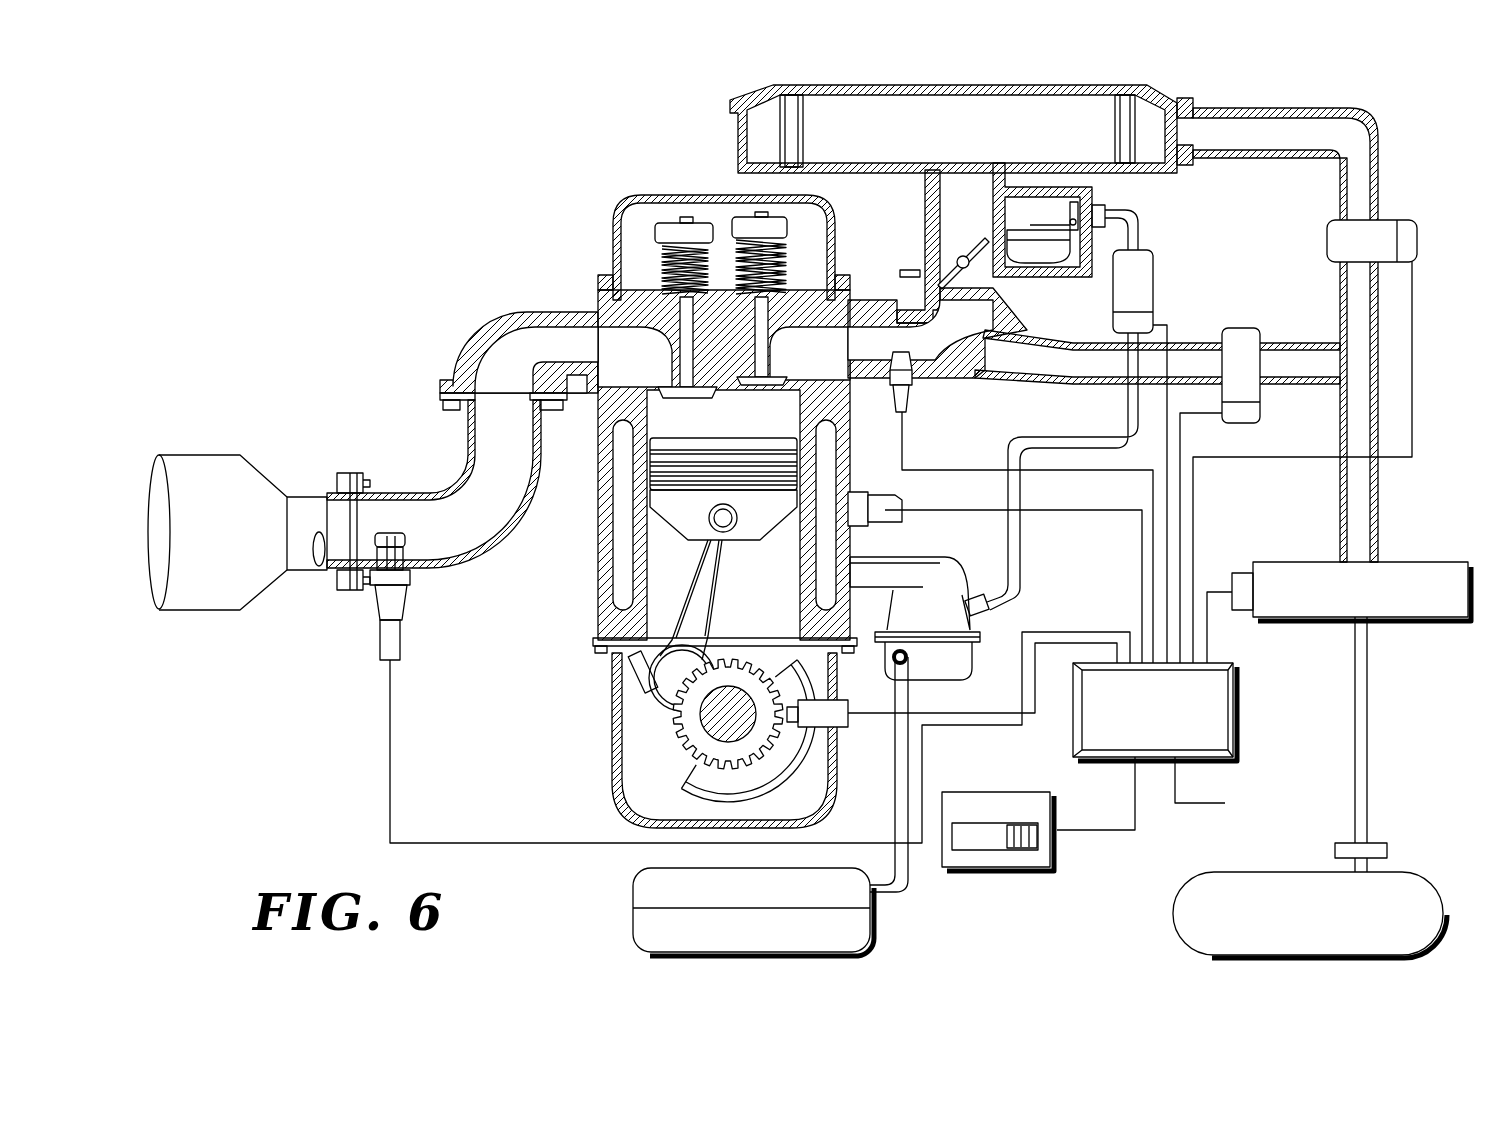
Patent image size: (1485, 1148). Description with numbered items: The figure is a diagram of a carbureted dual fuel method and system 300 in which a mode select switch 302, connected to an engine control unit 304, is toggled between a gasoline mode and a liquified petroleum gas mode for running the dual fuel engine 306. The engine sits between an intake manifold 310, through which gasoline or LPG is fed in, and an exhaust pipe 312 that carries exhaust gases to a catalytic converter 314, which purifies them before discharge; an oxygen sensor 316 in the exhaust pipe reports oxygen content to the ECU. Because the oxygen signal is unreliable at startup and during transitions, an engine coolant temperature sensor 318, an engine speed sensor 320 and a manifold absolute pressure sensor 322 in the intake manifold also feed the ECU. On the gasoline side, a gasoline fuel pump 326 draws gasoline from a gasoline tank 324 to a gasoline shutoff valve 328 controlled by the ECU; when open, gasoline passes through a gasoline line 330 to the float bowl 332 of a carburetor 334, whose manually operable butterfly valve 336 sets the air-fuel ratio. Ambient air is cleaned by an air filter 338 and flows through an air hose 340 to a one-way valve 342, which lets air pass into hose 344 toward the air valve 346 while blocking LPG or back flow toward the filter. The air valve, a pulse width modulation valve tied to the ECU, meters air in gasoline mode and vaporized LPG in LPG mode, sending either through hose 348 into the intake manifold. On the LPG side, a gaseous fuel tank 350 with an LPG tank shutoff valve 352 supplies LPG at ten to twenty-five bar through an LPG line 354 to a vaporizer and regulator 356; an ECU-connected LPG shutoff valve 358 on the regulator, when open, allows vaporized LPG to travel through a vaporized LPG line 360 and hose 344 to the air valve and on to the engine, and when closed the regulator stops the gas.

The carbureted dual fuel method and system 300 is at (308, 836).
The mode select switch 302 is at (993, 870).
The engine control unit 304 is at (1240, 715).
The dual fuel engine 306 is at (592, 500).
The intake manifold 310 is at (983, 362).
The exhaust pipe 312 is at (493, 537).
The catalytic converter 314 is at (218, 468).
The oxygen sensor 316 is at (397, 603).
The engine coolant temperature sensor 318 is at (887, 517).
The engine speed sensor 320 is at (860, 727).
The manifold absolute pressure sensor 322 is at (905, 397).
The gasoline tank 324 is at (643, 897).
The gasoline fuel pump 326 is at (925, 670).
The gasoline shutoff valve 328 is at (1147, 272).
The gasoline line 330 is at (1133, 233).
The float bowl 332 is at (1068, 273).
The carburetor 334 is at (930, 203).
The butterfly valve 336 is at (950, 265).
The air filter 338 is at (1148, 177).
The air hose 340 is at (1377, 158).
The one-way valve 342 is at (1327, 238).
The hose 344 is at (1310, 380).
The air valve 346 is at (1243, 328).
The hose 348 is at (1097, 388).
The gaseous fuel tank 350 is at (1240, 878).
The LPG tank shutoff valve 352 is at (1385, 847).
The LPG line 354 is at (1362, 745).
The vaporizer and regulator 356 is at (1323, 560).
The LPG shutoff valve 358 is at (1230, 577).
The vaporized LPG line 360 is at (1342, 495).